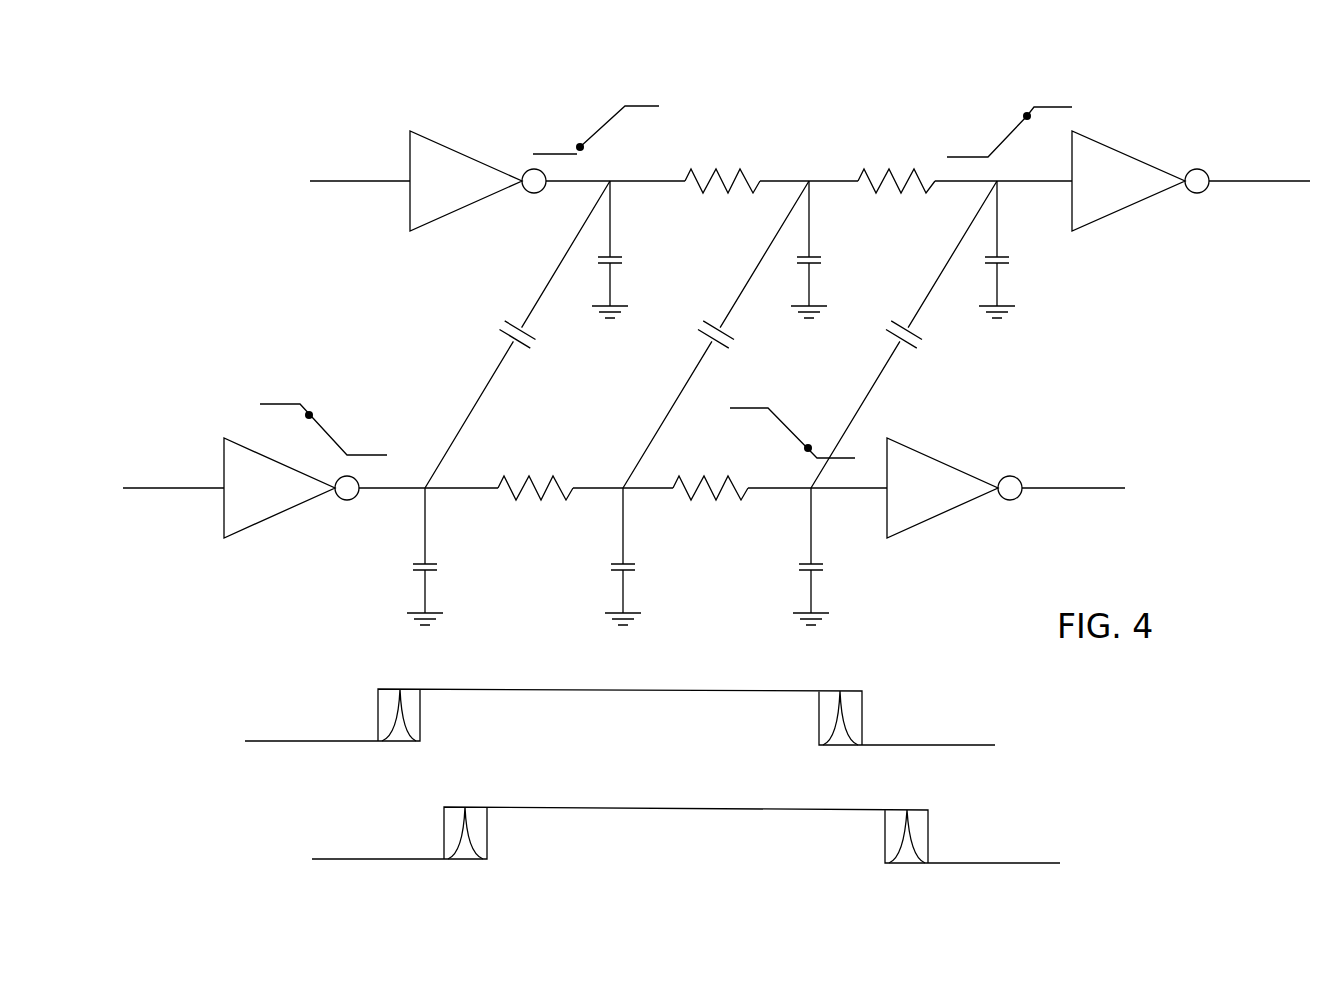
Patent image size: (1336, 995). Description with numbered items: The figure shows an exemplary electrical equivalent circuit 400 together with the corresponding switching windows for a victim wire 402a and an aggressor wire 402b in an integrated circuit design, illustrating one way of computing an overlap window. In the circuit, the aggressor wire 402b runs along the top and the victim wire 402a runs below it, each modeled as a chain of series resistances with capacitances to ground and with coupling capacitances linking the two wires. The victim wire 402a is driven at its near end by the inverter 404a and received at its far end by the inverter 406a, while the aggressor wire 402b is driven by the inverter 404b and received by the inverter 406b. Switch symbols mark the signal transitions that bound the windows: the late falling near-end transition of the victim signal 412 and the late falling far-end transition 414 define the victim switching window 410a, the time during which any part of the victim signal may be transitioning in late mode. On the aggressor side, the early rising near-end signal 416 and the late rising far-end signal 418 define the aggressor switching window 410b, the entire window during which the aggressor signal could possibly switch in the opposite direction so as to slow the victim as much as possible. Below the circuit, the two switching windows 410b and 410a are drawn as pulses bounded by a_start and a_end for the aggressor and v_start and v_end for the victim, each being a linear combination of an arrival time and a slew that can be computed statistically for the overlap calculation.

The electrical equivalent circuit 400 is at (145, 120).
The victim wire 402a is at (597, 488).
The aggressor wire 402b is at (660, 178).
The victim driver 404a is at (247, 500).
The aggressor driver 404b is at (449, 172).
The victim receiver 406a is at (910, 504).
The aggressor receiver 406b is at (1112, 177).
The victim switching window 410a is at (330, 842).
The aggressor switching window 410b is at (268, 727).
The late falling near-end transition of the victim signal 412 is at (280, 403).
The late falling far-end transition of the victim signal 414 is at (788, 428).
The early rising near-end aggressor signal 416 is at (631, 105).
The late rising far-end aggressor signal 418 is at (1043, 106).